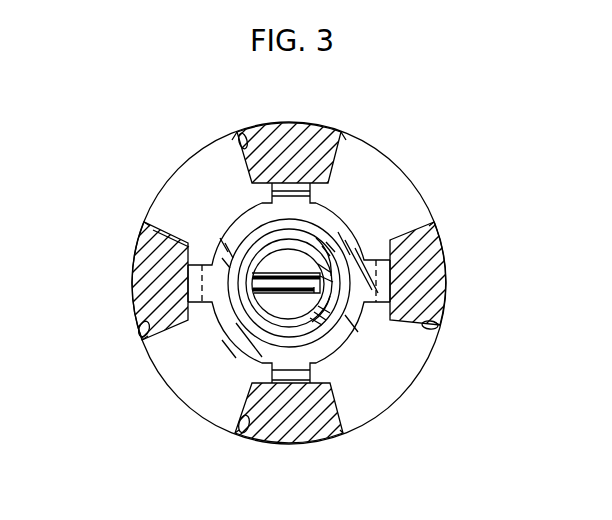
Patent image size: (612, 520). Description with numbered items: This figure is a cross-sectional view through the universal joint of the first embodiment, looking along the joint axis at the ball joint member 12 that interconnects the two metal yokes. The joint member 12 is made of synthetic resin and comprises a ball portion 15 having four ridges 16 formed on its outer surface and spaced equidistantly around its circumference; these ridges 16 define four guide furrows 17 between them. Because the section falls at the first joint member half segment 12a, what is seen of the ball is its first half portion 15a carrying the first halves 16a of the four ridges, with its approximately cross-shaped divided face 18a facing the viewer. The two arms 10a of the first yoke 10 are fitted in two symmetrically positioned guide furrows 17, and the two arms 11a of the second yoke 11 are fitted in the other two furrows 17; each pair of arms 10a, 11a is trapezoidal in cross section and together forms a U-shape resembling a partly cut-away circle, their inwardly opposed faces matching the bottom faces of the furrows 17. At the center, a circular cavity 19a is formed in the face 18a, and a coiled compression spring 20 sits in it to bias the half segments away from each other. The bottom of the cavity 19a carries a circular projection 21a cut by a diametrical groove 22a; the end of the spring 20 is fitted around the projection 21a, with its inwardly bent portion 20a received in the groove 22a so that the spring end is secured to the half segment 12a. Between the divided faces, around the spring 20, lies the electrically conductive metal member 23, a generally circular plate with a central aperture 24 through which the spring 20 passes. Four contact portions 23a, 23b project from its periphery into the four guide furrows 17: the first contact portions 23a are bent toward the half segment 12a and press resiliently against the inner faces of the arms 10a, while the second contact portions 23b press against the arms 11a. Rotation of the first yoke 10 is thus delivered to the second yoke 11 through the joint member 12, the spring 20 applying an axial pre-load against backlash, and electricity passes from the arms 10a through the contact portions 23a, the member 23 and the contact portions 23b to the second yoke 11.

The first yoke 10 is at (436, 242).
The arms of first yoke 10a is at (136, 314).
The second yoke 11 is at (238, 130).
The arms of second yoke 11a is at (289, 125).
The ball joint member 12 is at (405, 160).
The first joint member half segment 12a is at (172, 168).
The ball portion 15 is at (432, 301).
The first half portion 15a is at (148, 333).
The ridges 16 is at (362, 137).
The first halves of ridges 16a is at (201, 150).
The guide furrows 17 is at (250, 126).
The divided face of first half segment 18a is at (192, 364).
The circular cavity 19a is at (245, 242).
The coiled compression spring 20 is at (320, 232).
The bent portion of spring 20a is at (298, 288).
The circular projection 21a is at (277, 248).
The diametrical groove 22a is at (323, 288).
The electrically conductive metal member 23 is at (194, 238).
The first contact portions 23a is at (136, 281).
The second contact portions 23b is at (303, 184).
The aperture 24 is at (326, 246).